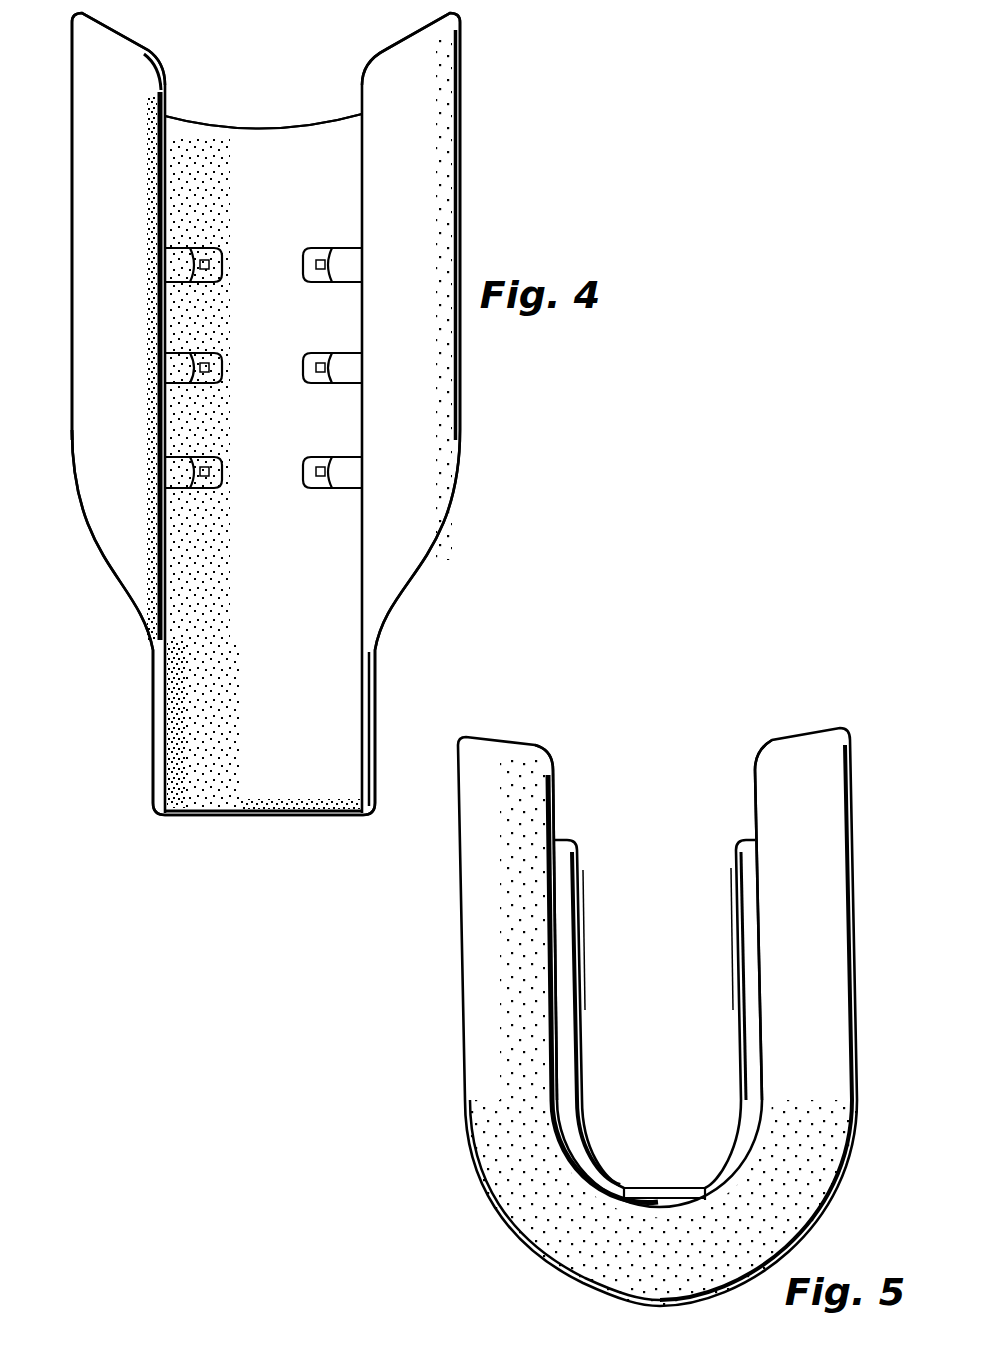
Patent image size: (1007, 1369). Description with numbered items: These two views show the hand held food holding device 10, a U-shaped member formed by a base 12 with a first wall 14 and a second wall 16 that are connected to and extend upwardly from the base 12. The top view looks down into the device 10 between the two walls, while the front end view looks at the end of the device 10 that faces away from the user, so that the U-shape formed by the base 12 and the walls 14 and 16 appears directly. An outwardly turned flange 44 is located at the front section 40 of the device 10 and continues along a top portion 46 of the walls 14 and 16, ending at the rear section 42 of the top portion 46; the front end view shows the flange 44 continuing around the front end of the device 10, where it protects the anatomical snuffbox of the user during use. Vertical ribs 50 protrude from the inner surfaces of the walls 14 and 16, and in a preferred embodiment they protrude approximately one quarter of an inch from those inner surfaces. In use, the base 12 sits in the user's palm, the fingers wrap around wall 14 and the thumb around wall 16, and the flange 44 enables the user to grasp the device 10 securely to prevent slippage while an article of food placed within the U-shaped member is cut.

In FIG. 4, the hand held food holding device 10 is at (512, 104).
In FIG. 4, the base 12 is at (278, 766).
In FIG. 5, the base 12 is at (656, 1196).
In FIG. 4, the first wall 14 is at (151, 663).
In FIG. 5, the first wall 14 is at (752, 803).
In FIG. 4, the second wall 16 is at (379, 663).
In FIG. 5, the second wall 16 is at (556, 805).
In FIG. 4, the front section 40 is at (270, 74).
In FIG. 4, the rear section 42 is at (244, 819).
In FIG. 4, the outwardly turned flange 44 is at (107, 215).
In FIG. 5, the outwardly turned flange 44 is at (483, 958).
In FIG. 4, the top portion 46 is at (165, 198).
In FIG. 5, the top portion 46 is at (555, 770).
In FIG. 4, the vertical ribs 50 is at (222, 457).
In FIG. 5, the vertical ribs 50 is at (580, 907).